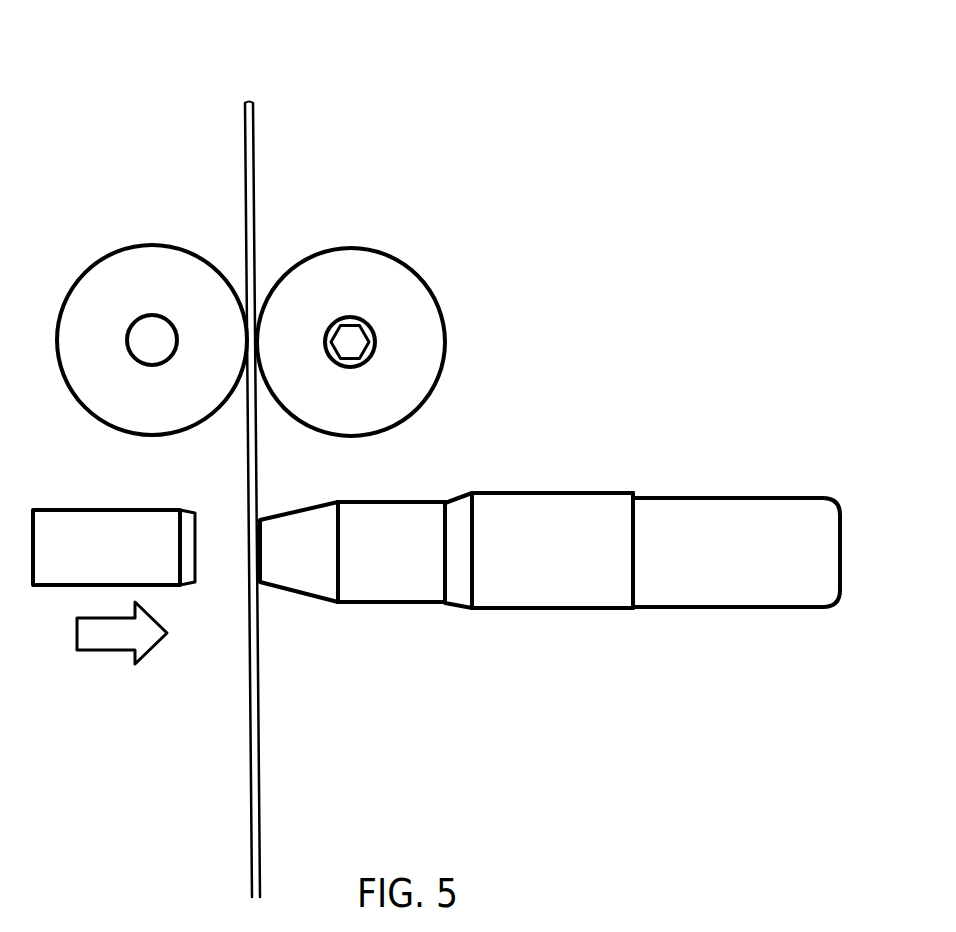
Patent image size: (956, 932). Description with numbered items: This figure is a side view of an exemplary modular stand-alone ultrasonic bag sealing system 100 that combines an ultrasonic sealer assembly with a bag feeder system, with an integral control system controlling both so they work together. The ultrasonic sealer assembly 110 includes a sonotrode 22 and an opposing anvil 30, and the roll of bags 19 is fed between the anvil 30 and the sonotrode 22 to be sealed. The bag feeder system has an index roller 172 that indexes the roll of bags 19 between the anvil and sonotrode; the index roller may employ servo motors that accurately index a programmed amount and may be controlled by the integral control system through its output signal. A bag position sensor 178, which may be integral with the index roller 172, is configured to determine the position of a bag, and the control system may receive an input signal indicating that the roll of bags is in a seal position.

The roll of bags 19 is at (245, 102).
The sonotrode 22 is at (290, 575).
The anvil 30 is at (192, 575).
The modular stand-alone ultrasonic bag sealing system 100 is at (582, 296).
The ultrasonic sealer assembly 110 is at (714, 498).
The index roller 172 is at (348, 280).
The bag position sensor 178 is at (353, 343).